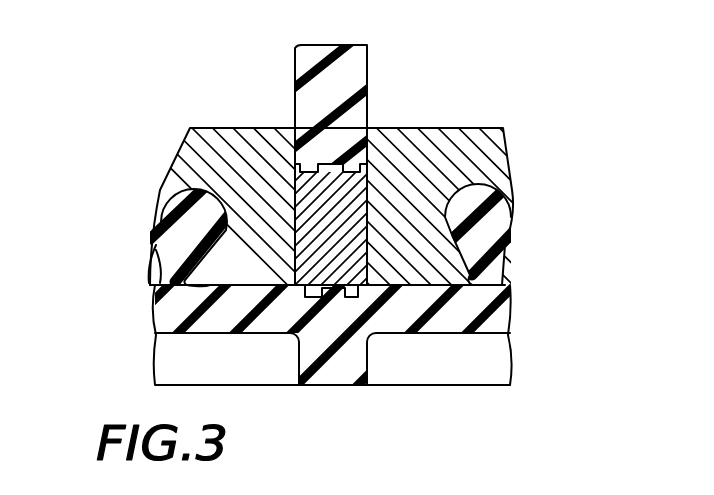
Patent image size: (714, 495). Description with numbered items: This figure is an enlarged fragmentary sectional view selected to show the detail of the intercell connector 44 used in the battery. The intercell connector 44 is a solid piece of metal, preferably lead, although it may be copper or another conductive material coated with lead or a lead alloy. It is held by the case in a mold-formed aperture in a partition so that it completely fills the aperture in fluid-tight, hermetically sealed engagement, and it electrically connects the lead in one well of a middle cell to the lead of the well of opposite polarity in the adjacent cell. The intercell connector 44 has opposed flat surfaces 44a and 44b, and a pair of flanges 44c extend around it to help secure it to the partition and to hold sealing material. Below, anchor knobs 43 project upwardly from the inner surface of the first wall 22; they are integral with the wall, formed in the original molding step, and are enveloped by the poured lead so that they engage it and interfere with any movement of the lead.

The first wall 22 is at (445, 325).
The anchor knobs 43 is at (190, 223).
The intercell connector 44 is at (333, 200).
The flat surface 44a is at (287, 213).
The flat surface 44b is at (372, 195).
The flanges 44c is at (322, 172).